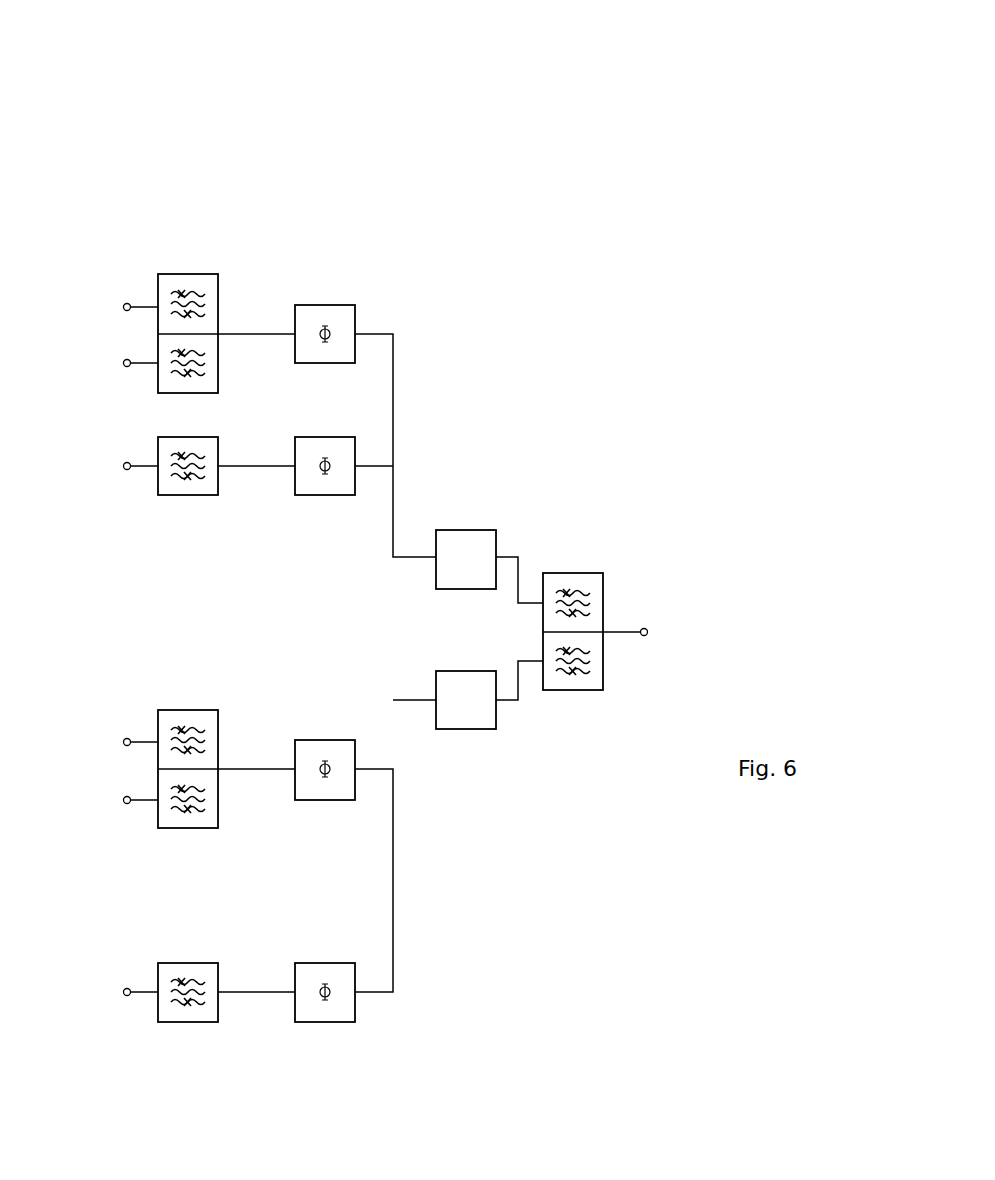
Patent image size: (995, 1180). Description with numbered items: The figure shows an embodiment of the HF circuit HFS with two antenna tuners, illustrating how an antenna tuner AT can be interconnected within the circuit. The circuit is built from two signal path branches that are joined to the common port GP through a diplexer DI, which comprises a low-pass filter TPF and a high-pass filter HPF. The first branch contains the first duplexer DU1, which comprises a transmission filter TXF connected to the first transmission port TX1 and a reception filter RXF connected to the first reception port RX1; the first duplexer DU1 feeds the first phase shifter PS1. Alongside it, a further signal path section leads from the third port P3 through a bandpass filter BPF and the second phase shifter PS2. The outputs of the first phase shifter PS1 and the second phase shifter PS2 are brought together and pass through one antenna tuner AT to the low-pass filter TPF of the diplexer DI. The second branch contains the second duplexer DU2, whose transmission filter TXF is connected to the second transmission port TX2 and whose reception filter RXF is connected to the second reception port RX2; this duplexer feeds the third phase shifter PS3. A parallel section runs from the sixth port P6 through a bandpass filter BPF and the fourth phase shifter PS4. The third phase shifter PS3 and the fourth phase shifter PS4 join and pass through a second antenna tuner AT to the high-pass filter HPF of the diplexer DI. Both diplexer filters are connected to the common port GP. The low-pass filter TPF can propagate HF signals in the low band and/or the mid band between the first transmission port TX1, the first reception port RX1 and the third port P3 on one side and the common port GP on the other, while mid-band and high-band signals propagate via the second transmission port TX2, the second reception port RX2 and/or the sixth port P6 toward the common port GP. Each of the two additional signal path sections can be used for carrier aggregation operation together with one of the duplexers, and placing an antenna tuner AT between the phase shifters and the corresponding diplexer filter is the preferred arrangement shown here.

The HF circuit HFS is at (563, 83).
The first duplexer DU1 is at (238, 272).
The second duplexer DU2 is at (130, 827).
The first transmission port TX1 is at (118, 303).
The first reception port RX1 is at (118, 360).
The second transmission port TX2 is at (118, 738).
The second reception port RX2 is at (118, 795).
The third port P3 is at (118, 462).
The sixth port P6 is at (118, 988).
The bandpass filter BPF is at (218, 452).
The transmission filter TXF is at (168, 710).
The reception filter RXF is at (220, 797).
The first phase shifter PS1 is at (320, 300).
The second phase shifter PS2 is at (330, 497).
The third phase shifter PS3 is at (330, 740).
The fourth phase shifter PS4 is at (328, 1022).
The antenna tuner AT is at (450, 530).
The diplexer DI is at (635, 592).
The low-pass filter TPF is at (560, 573).
The high-pass filter HPF is at (590, 693).
The common port GP is at (648, 635).